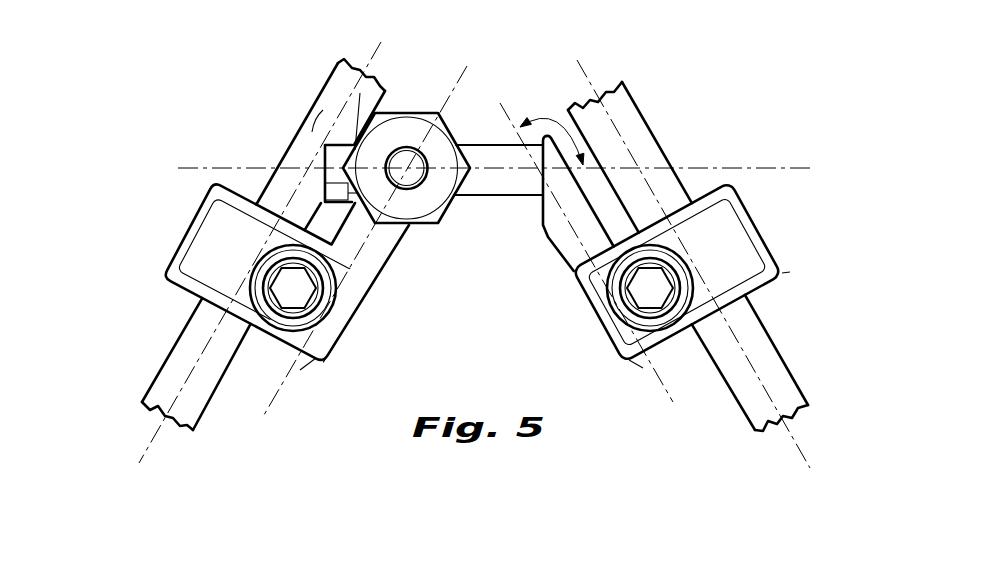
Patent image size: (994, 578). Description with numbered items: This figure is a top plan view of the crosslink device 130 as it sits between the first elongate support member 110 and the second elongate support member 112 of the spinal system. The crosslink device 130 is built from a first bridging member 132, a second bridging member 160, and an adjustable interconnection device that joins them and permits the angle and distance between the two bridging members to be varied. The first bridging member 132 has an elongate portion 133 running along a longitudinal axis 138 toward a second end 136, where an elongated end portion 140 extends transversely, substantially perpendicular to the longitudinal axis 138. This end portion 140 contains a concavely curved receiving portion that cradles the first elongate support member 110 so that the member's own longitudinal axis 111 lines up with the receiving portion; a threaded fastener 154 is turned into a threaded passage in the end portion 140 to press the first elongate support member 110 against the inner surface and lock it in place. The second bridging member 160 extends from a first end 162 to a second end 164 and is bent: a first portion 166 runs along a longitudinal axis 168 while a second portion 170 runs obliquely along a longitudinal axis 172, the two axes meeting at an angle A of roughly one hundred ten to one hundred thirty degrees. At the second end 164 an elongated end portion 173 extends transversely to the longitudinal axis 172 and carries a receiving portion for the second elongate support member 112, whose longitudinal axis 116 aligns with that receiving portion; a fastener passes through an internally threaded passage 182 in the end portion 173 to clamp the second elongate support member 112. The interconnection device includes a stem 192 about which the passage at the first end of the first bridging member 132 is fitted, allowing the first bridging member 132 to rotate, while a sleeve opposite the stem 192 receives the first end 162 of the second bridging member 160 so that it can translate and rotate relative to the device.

The crosslink device 130 is at (188, 104).
The first elongate support member 110 is at (302, 127).
The longitudinal axis of the first elongate support member 111 is at (148, 442).
The second elongate support member 112 is at (645, 110).
The longitudinal axis of the second elongate support member 116 is at (800, 445).
The first bridging member 132 is at (398, 286).
The elongate portion 133 is at (314, 185).
The second end 136 is at (300, 370).
The longitudinal axis 138 is at (278, 407).
The elongated end portion 140 is at (152, 253).
The threaded fastener 154 is at (237, 268).
The second bridging member 160 is at (549, 282).
The first end 162 is at (323, 110).
The second end 164 is at (643, 368).
The first portion 166 is at (476, 198).
The longitudinal axis 168 is at (738, 167).
The second portion 170 is at (546, 258).
The longitudinal axis 172 is at (663, 400).
The elongated end portion 173 is at (790, 272).
The internally threaded passage 182 is at (690, 260).
The stem 192 is at (407, 150).
The angle A is at (560, 112).